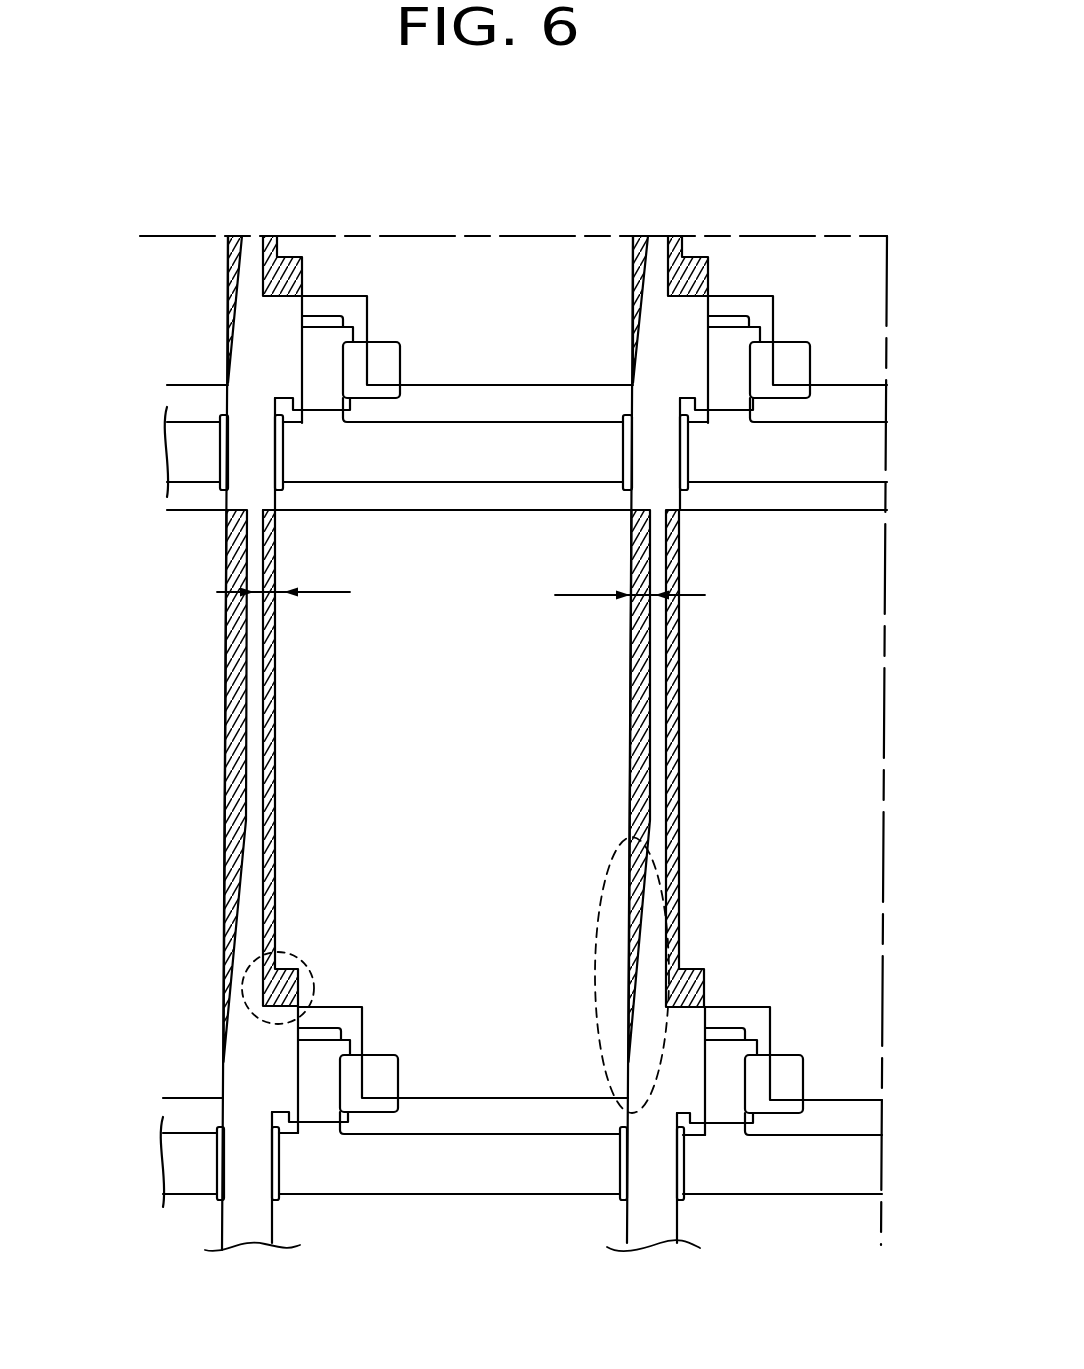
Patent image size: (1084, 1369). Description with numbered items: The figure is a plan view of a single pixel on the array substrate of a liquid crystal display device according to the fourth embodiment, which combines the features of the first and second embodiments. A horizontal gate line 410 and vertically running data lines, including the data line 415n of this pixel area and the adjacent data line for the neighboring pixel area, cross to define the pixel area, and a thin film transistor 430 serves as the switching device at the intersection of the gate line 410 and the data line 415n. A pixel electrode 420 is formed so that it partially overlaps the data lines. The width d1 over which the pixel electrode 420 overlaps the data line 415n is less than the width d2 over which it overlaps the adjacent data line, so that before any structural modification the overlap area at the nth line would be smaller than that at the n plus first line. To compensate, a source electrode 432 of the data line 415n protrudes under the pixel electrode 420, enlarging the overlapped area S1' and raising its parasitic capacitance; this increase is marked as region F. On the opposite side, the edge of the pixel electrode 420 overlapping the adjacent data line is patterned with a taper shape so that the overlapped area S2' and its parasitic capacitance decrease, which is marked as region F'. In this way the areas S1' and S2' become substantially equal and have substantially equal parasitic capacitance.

The gate line 410 is at (467, 1165).
The pixel electrode 420 is at (533, 1070).
The thin film transistor 430 is at (320, 1091).
The source electrode 432 is at (287, 1090).
The data line 415n is at (240, 1225).
The overlapped area S1' is at (326, 621).
The overlapped area S2' is at (610, 621).
The width d1 is at (283, 578).
The width d2 is at (630, 581).
The region F is at (300, 953).
The region F' is at (608, 954).